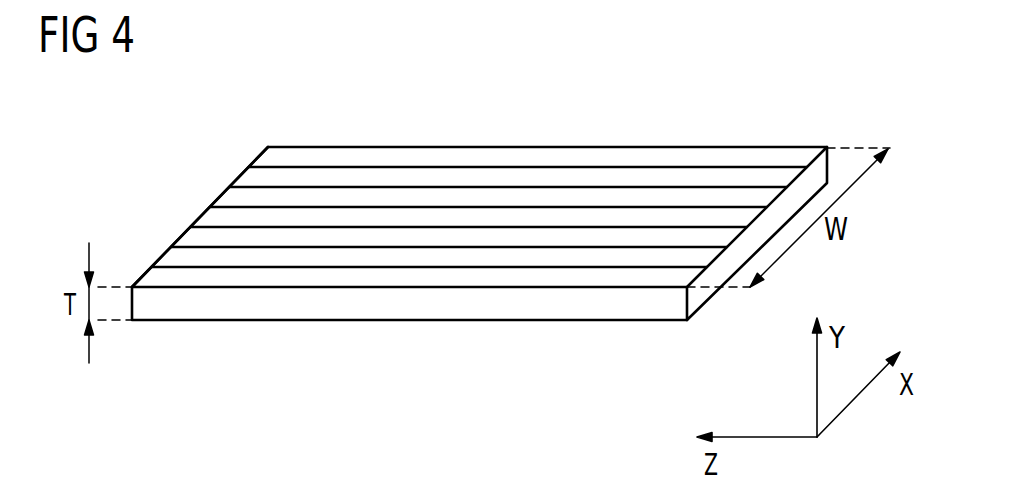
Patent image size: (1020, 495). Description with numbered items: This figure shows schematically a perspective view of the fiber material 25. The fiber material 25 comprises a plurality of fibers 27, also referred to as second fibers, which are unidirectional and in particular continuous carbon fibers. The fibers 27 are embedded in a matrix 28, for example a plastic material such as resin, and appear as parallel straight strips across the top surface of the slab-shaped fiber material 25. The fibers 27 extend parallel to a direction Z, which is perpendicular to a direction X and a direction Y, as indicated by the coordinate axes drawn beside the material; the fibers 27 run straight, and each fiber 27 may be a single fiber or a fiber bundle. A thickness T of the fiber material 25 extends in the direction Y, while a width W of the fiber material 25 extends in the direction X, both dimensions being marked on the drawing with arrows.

The fiber material 25 is at (588, 97).
The fibers 27 is at (408, 167).
The matrix 28 is at (233, 198).